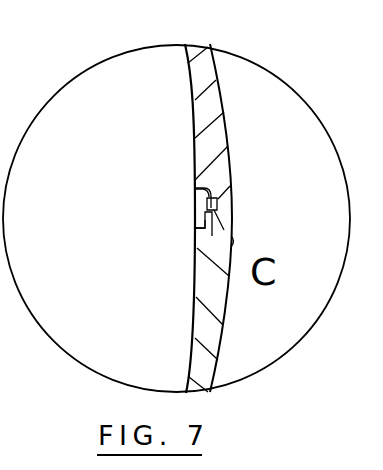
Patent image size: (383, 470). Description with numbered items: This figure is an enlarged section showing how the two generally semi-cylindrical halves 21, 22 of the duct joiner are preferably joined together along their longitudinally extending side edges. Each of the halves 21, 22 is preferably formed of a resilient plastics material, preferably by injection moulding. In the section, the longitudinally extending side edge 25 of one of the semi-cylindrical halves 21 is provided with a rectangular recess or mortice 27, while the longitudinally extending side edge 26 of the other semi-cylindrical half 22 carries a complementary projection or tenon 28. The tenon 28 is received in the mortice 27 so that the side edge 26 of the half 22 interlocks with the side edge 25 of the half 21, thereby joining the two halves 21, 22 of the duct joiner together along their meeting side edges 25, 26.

The semi-cylindrical half 21 is at (218, 148).
The semi-cylindrical half 22 is at (205, 288).
The longitudinally extending side edge 25 is at (231, 242).
The longitudinally extending side edge 26 is at (195, 226).
The rectangular recess or mortice 27 is at (195, 188).
The projection or tenon 28 is at (217, 213).